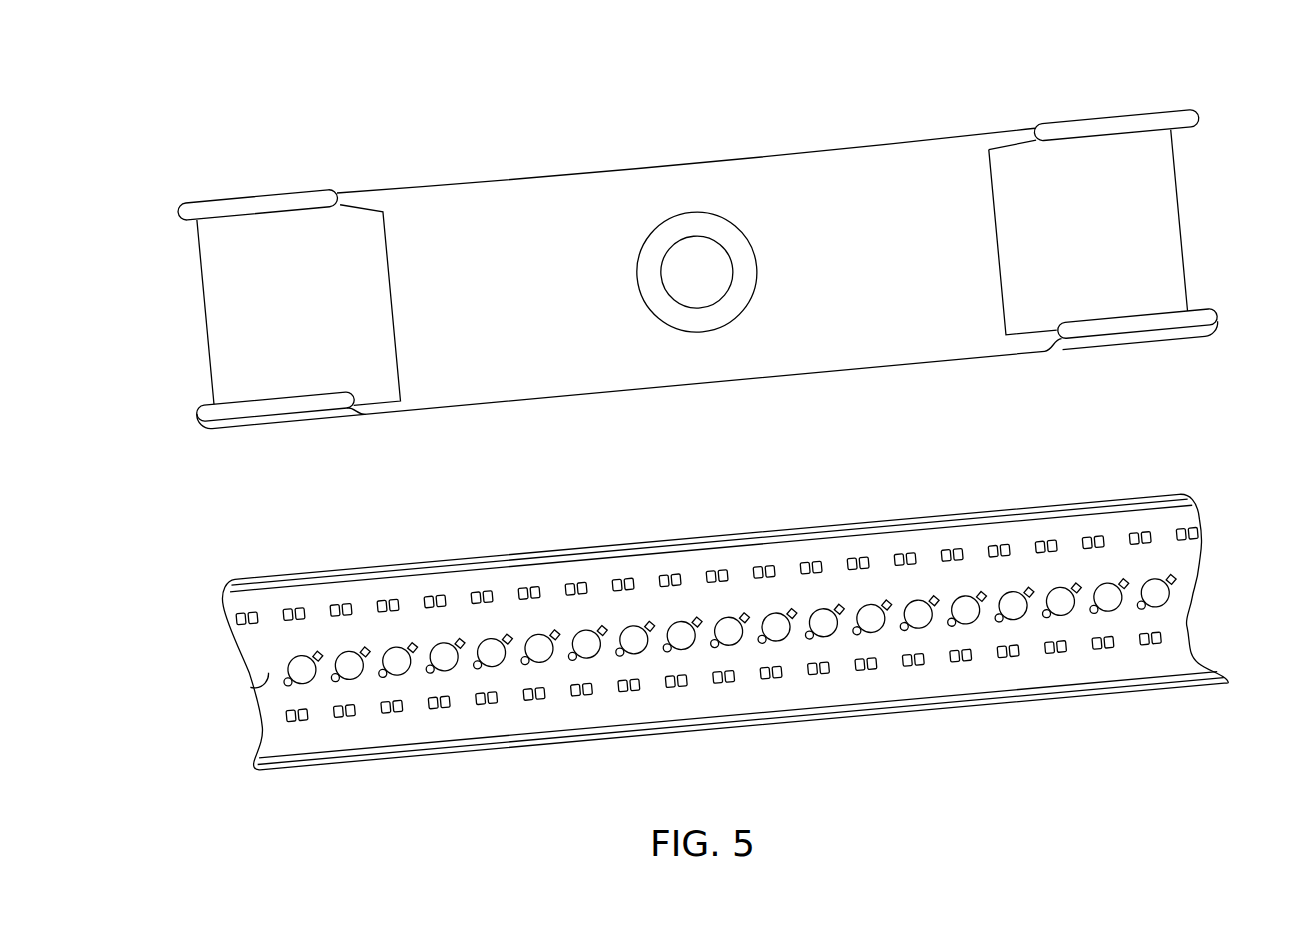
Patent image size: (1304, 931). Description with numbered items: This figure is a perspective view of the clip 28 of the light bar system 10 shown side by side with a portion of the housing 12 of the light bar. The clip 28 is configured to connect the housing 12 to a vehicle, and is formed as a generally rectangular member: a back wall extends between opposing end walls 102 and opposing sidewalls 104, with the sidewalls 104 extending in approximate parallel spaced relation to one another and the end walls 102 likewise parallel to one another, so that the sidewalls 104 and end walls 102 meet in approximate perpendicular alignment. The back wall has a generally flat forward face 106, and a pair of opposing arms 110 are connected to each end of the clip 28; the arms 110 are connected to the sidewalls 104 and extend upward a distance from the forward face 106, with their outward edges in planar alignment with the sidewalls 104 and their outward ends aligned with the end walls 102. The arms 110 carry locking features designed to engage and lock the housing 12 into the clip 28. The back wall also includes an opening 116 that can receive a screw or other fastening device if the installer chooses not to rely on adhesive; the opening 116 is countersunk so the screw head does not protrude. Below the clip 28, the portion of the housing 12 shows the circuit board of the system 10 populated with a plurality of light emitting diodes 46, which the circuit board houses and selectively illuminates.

The light bar system 10 is at (692, 265).
The housing 12 is at (513, 745).
The clip 28 is at (476, 184).
The light emitting diodes 46 is at (866, 555).
The end walls 102 is at (201, 292).
The sidewalls 104 is at (813, 151).
The forward face 106 is at (863, 270).
The arms 110 is at (236, 207).
The opening 116 is at (697, 247).